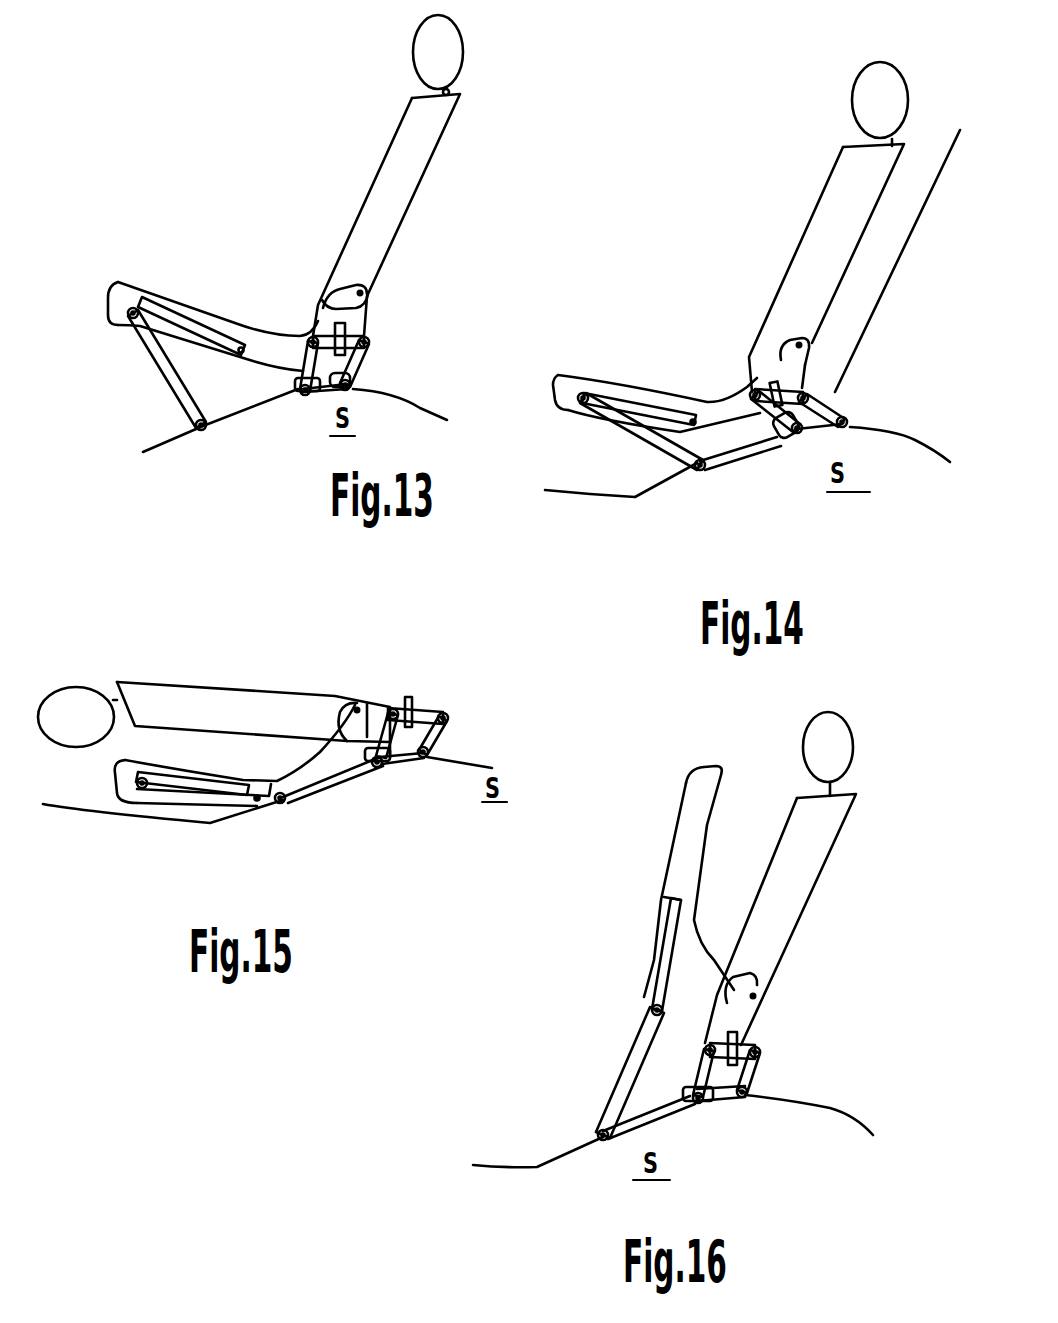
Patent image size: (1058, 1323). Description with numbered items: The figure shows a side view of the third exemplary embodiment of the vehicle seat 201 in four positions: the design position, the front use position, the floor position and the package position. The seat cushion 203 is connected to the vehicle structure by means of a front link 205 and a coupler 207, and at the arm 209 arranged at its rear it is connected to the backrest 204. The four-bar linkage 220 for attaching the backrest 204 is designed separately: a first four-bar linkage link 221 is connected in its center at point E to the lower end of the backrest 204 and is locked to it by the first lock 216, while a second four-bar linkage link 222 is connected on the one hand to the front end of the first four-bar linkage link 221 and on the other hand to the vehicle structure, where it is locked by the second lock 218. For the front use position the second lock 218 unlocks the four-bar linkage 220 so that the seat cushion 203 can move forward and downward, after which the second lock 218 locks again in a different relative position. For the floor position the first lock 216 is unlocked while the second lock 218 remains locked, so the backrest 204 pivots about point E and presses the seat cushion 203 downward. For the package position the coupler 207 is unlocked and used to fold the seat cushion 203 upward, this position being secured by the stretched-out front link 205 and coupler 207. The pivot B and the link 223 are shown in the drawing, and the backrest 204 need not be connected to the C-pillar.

In FIG. 13, the vehicle seat 201 is at (262, 262).
In FIG. 14, the vehicle seat 201 is at (703, 298).
In FIG. 15, the vehicle seat 201 is at (322, 812).
In FIG. 16, the vehicle seat 201 is at (870, 818).
In FIG. 13, the seat cushion 203 is at (200, 272).
In FIG. 14, the seat cushion 203 is at (656, 346).
In FIG. 15, the seat cushion 203 is at (227, 807).
In FIG. 16, the seat cushion 203 is at (717, 859).
In FIG. 13, the backrest 204 is at (382, 215).
In FIG. 14, the backrest 204 is at (814, 268).
In FIG. 15, the backrest 204 is at (253, 679).
In FIG. 16, the backrest 204 is at (816, 919).
In FIG. 13, the front link 205 is at (153, 370).
In FIG. 14, the front link 205 is at (634, 481).
In FIG. 15, the front link 205 is at (211, 793).
In FIG. 16, the front link 205 is at (571, 1073).
In FIG. 13, the coupler 207 is at (191, 285).
In FIG. 14, the coupler 207 is at (639, 409).
In FIG. 15, the coupler 207 is at (198, 786).
In FIG. 16, the coupler 207 is at (607, 954).
In FIG. 13, the arm 209 is at (411, 266).
In FIG. 14, the arm 209 is at (794, 351).
In FIG. 15, the arm 209 is at (349, 722).
In FIG. 16, the arm 209 is at (807, 963).
In FIG. 13, the first lock 216 is at (439, 308).
In FIG. 14, the first lock 216 is at (863, 349).
In FIG. 15, the first lock 216 is at (396, 664).
In FIG. 16, the first lock 216 is at (801, 1028).
In FIG. 13, the second lock 218 is at (298, 446).
In FIG. 14, the second lock 218 is at (765, 480).
In FIG. 15, the second lock 218 is at (412, 792).
In FIG. 16, the second lock 218 is at (696, 1146).
In FIG. 13, the four-bar linkage 220 is at (417, 356).
In FIG. 14, the four-bar linkage 220 is at (691, 508).
In FIG. 15, the four-bar linkage 220 is at (495, 725).
In FIG. 16, the four-bar linkage 220 is at (833, 1080).
In FIG. 13, the first four-bar linkage link 221 is at (411, 330).
In FIG. 14, the first four-bar linkage link 221 is at (853, 374).
In FIG. 15, the first four-bar linkage link 221 is at (418, 716).
In FIG. 16, the first four-bar linkage link 221 is at (732, 1051).
In FIG. 13, the second four-bar linkage link 222 is at (266, 368).
In FIG. 14, the second four-bar linkage link 222 is at (759, 480).
In FIG. 15, the second four-bar linkage link 222 is at (387, 735).
In FIG. 16, the second four-bar linkage link 222 is at (703, 1073).
In FIG. 13, the rear link 223 is at (429, 377).
In FIG. 14, the rear link 223 is at (879, 411).
In FIG. 15, the rear link 223 is at (432, 736).
In FIG. 16, the rear link 223 is at (748, 1073).
In FIG. 13, the pivot point B is at (91, 325).
In FIG. 16, the pivot point B is at (583, 1007).
In FIG. 15, the point E' E is at (412, 706).